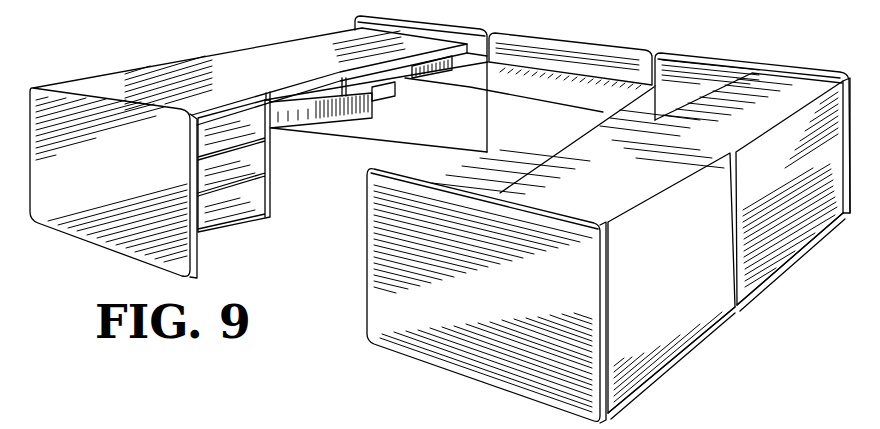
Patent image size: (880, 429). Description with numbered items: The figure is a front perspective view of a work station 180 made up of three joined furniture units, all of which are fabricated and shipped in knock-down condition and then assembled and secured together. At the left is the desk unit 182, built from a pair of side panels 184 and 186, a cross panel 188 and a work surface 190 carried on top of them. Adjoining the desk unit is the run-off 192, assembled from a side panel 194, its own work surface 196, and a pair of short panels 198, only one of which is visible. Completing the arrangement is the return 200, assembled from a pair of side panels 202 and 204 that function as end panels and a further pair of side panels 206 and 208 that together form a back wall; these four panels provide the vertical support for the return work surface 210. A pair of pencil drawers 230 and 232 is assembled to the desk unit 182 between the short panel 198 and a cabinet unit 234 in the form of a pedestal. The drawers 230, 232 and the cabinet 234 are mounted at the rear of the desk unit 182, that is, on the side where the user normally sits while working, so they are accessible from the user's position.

The work station 180 is at (708, 54).
The desk unit 182 is at (192, 55).
The side panel 184 is at (432, 36).
The side panel 186 is at (130, 174).
The cross panel 188 is at (295, 126).
The work surface 190 is at (292, 77).
The run-off 192 is at (606, 16).
The side panel 194 is at (586, 140).
The work surface 196 is at (513, 77).
The short panel 198 is at (437, 65).
The return 200 is at (768, 296).
The side panel 202 is at (717, 74).
The side panel 204 is at (512, 304).
The side panel 206 is at (698, 260).
The side panel 208 is at (814, 181).
The return work surface 210 is at (705, 140).
The pencil drawer 230 is at (313, 97).
The pencil drawer 232 is at (380, 100).
The cabinet unit 234 is at (244, 224).